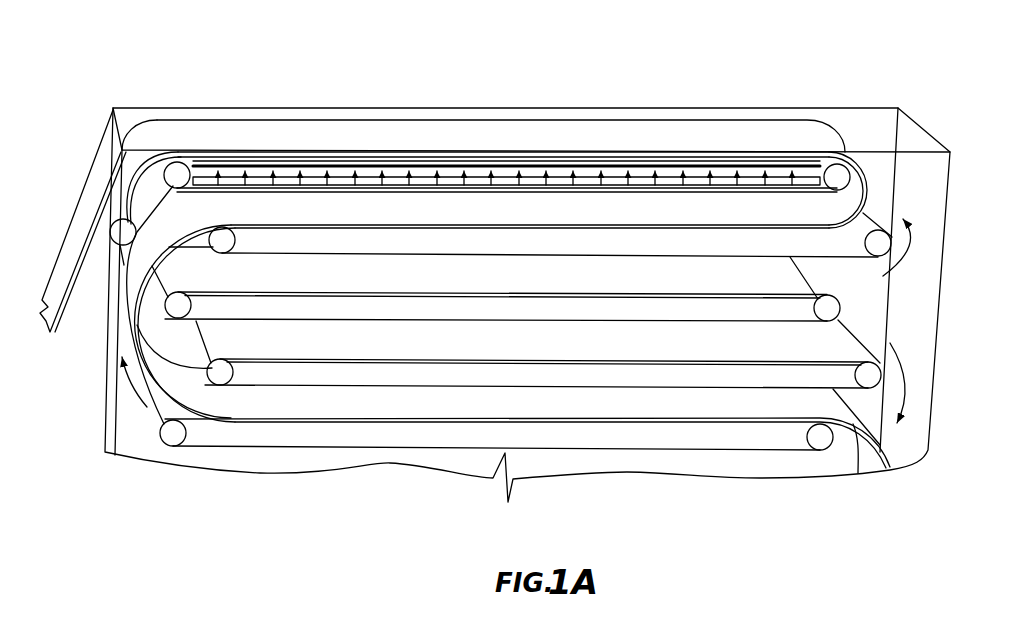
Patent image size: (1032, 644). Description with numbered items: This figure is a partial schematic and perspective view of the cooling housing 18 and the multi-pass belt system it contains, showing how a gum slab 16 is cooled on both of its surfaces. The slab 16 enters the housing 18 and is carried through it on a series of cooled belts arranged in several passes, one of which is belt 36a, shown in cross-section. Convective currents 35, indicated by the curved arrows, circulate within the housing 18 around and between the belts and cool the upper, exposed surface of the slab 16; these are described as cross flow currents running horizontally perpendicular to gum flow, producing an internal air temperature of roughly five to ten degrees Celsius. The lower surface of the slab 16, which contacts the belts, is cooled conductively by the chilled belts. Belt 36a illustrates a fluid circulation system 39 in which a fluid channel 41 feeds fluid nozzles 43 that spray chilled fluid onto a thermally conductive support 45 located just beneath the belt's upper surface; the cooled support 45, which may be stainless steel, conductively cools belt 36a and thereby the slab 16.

The gum slab 16 is at (86, 230).
The cooling housing 18 is at (836, 88).
The convective currents 35 is at (128, 382).
The belt 36a is at (850, 177).
The fluid circulation system 39 is at (205, 194).
The fluid channel 41 is at (645, 182).
The fluid nozzles 43 is at (470, 172).
The thermally conductive support 45 is at (560, 165).